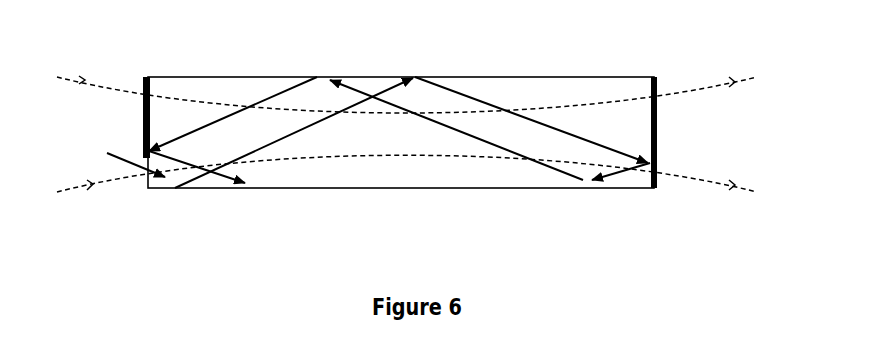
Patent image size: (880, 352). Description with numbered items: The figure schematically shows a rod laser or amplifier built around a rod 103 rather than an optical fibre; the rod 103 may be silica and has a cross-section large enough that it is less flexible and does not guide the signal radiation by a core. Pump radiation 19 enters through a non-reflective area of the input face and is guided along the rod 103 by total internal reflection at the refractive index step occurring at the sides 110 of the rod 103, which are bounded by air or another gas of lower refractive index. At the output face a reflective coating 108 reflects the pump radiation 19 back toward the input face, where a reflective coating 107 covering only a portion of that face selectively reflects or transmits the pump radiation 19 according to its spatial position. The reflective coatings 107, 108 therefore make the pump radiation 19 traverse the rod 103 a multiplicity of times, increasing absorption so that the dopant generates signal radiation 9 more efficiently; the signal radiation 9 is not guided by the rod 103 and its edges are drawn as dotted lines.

The sides of the rod 110 is at (470, 77).
The reflective coating on input face 107 is at (142, 112).
The reflective coating on output face 108 is at (658, 112).
The rod 103 is at (565, 98).
The signal radiation 9 is at (723, 133).
The pump radiation 19 is at (257, 148).